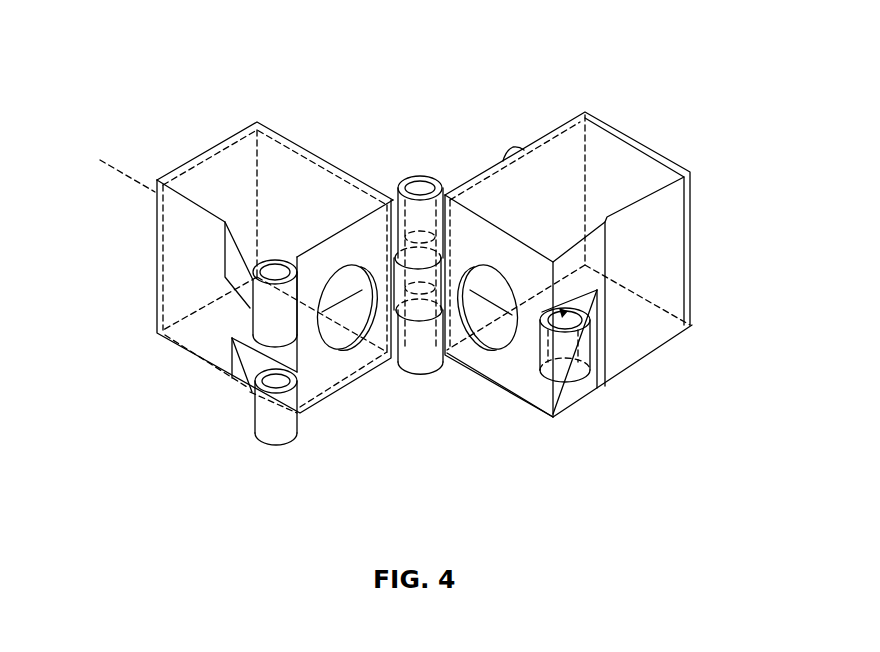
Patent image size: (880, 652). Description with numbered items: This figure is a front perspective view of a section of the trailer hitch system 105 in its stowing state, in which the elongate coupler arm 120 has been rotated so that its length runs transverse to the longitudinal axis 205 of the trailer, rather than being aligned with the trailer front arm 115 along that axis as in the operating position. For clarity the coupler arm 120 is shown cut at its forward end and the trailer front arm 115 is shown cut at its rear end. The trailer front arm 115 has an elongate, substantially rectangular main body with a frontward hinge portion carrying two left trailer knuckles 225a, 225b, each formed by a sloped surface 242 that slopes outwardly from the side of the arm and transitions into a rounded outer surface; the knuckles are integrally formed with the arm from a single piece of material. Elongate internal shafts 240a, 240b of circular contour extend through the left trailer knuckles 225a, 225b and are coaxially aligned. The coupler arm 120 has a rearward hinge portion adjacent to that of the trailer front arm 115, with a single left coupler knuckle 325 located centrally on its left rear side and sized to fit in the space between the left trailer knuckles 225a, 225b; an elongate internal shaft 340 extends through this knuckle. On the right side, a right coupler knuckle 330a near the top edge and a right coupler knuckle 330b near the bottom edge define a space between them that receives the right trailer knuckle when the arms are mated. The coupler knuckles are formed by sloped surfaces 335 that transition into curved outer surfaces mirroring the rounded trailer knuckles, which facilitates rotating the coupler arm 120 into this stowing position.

The hitch system 105 is at (190, 36).
The trailer front arm 115 is at (222, 130).
The coupler arm 120 is at (625, 116).
The longitudinal axis 205 is at (478, 378).
The left trailer knuckle 225a is at (262, 311).
The left trailer knuckle 225b is at (268, 455).
The internal shaft 240a is at (276, 262).
The internal shaft 240b is at (290, 382).
The sloped surface 242 is at (238, 392).
The left coupler knuckle 325 is at (563, 380).
The right coupler knuckle 330a is at (436, 174).
The right coupler knuckle 330b is at (424, 352).
The sloped surface 335 is at (512, 147).
The internal shaft 340 is at (588, 347).